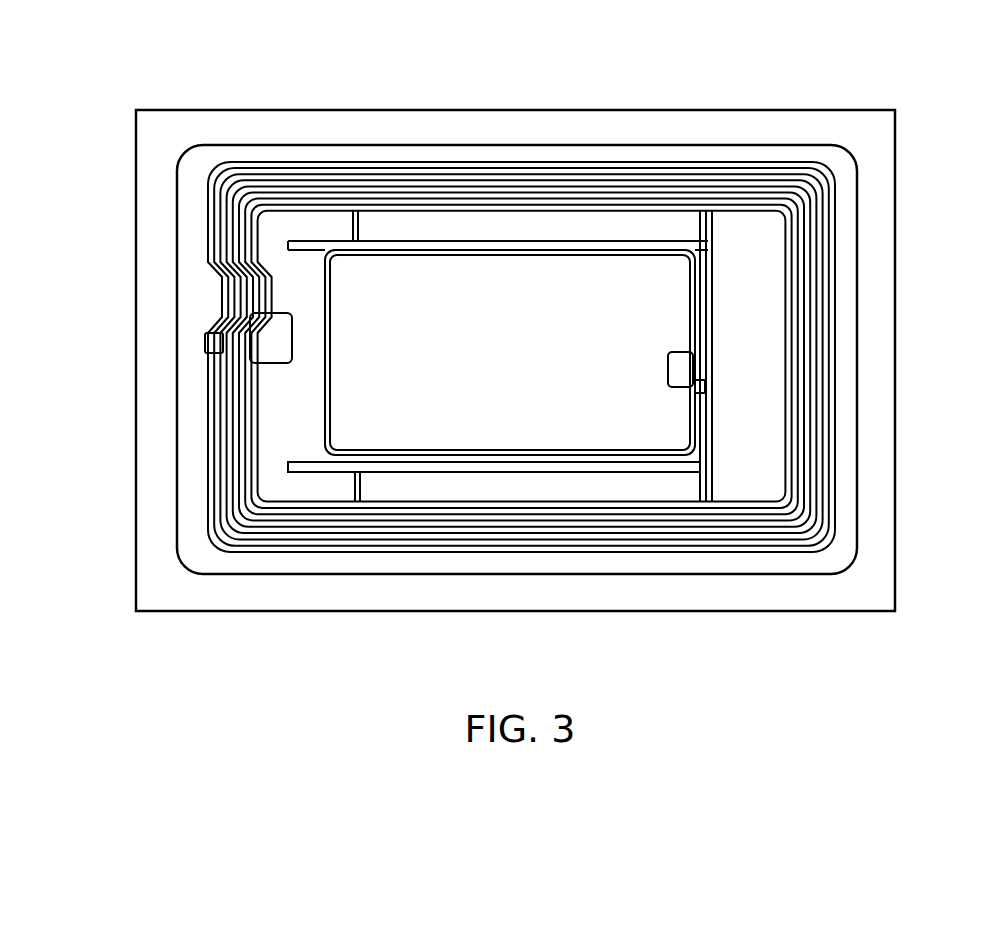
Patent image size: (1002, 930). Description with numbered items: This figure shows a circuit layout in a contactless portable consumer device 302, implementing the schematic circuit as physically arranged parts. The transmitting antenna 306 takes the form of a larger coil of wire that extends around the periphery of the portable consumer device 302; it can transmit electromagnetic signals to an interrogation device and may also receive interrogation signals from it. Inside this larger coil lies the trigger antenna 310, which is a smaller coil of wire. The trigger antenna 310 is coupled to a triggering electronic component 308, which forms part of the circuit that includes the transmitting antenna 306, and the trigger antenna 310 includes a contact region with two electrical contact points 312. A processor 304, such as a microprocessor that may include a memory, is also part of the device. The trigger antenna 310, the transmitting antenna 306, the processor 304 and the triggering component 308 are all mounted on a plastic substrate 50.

The portable consumer device 302 is at (846, 108).
The plastic substrate 50 is at (879, 552).
The transmitting antenna 306 is at (806, 346).
The processor 304 is at (264, 343).
The triggering electronic component 308 is at (683, 392).
The trigger antenna 310 is at (545, 240).
The electrical contact points 312 is at (303, 462).